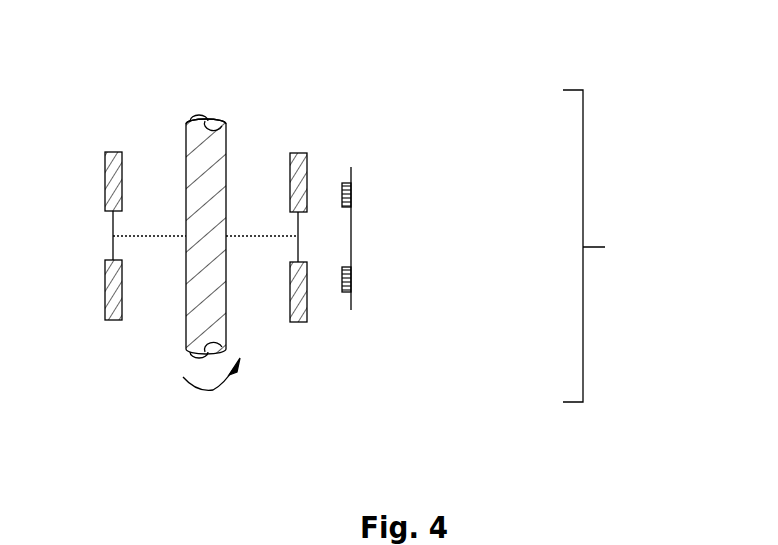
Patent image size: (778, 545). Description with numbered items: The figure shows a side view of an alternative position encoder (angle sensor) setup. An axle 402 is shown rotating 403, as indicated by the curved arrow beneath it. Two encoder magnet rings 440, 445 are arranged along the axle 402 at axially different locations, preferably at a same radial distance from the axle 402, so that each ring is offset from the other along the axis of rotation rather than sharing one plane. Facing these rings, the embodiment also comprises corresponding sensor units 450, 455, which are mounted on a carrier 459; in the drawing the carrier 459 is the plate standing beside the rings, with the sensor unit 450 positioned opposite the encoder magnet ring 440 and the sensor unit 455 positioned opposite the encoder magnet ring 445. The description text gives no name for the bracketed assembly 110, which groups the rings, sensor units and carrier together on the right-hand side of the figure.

The sensor assembly 110 is at (622, 246).
The axle 402 is at (226, 143).
The rotating 403 is at (213, 390).
The encoder magnet ring 440 is at (307, 180).
The encoder magnet ring 445 is at (308, 312).
The sensor unit 450 is at (342, 206).
The sensor unit 455 is at (342, 290).
The carrier 459 is at (352, 247).